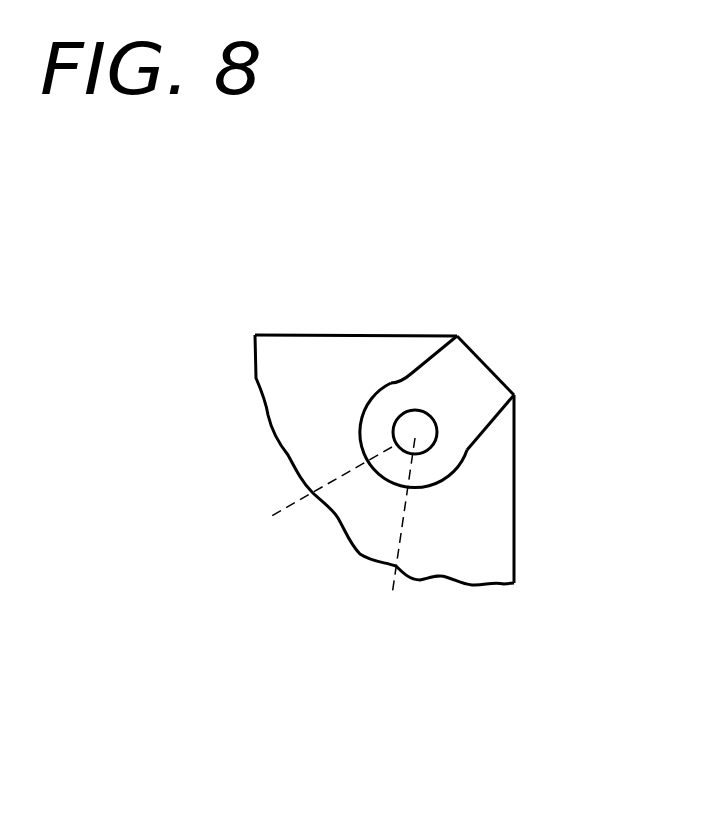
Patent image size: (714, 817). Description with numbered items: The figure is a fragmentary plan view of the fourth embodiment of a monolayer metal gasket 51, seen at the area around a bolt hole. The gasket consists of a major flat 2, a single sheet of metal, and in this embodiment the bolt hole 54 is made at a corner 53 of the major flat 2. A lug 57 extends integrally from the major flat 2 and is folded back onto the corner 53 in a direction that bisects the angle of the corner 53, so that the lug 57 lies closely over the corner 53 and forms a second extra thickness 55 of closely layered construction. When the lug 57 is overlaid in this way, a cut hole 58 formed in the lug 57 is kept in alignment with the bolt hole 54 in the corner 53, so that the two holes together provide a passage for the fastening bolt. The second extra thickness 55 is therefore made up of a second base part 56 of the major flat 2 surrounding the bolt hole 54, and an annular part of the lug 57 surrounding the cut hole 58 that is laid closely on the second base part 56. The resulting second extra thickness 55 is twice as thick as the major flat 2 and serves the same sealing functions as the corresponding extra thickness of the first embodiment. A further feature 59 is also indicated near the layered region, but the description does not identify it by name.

The major flat 2 is at (302, 366).
The monolayer metal gasket 51 is at (513, 345).
The corner 53 is at (423, 348).
The bolt hole 54 is at (394, 538).
The second extra thickness 55 is at (457, 490).
The second base part 56 is at (311, 497).
The lug 57 is at (480, 398).
The cut hole 58 is at (412, 430).
The recess 59 is at (447, 450).